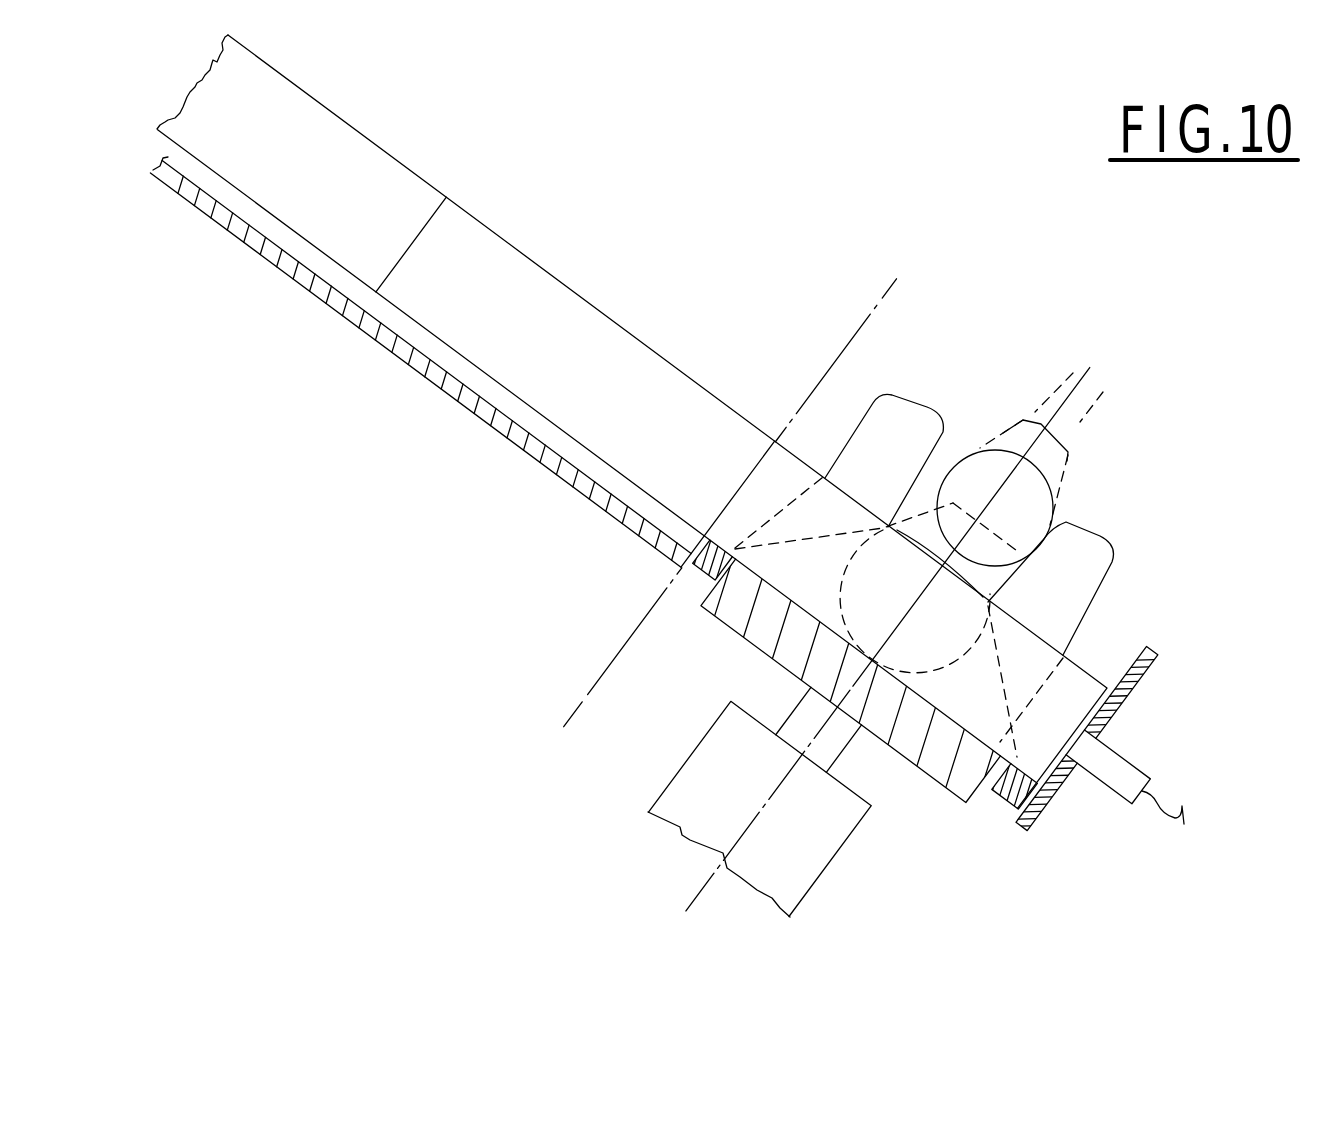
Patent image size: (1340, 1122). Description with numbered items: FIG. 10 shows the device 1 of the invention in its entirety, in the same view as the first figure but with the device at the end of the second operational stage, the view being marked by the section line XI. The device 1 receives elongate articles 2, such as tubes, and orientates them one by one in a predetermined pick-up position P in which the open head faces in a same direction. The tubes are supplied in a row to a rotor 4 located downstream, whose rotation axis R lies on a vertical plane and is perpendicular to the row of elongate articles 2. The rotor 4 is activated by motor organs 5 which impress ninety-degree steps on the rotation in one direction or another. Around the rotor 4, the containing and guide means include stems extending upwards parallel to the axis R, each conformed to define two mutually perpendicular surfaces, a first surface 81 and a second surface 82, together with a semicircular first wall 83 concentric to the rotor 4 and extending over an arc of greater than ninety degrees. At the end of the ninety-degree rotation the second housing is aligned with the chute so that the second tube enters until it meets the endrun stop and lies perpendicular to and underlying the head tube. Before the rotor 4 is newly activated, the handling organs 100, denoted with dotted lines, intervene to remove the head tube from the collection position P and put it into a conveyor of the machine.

The device 1 is at (468, 557).
The elongate articles 2 is at (379, 161).
The rotor 4 is at (955, 810).
The motor organs 5 is at (818, 862).
The first surface 81 is at (973, 450).
The second surface 82 is at (882, 443).
The first wall 83 is at (1098, 608).
The handling organs 100 is at (1070, 455).
The pick-up position P is at (1076, 494).
The rotation axis R is at (700, 889).
The section line XI is at (885, 287).